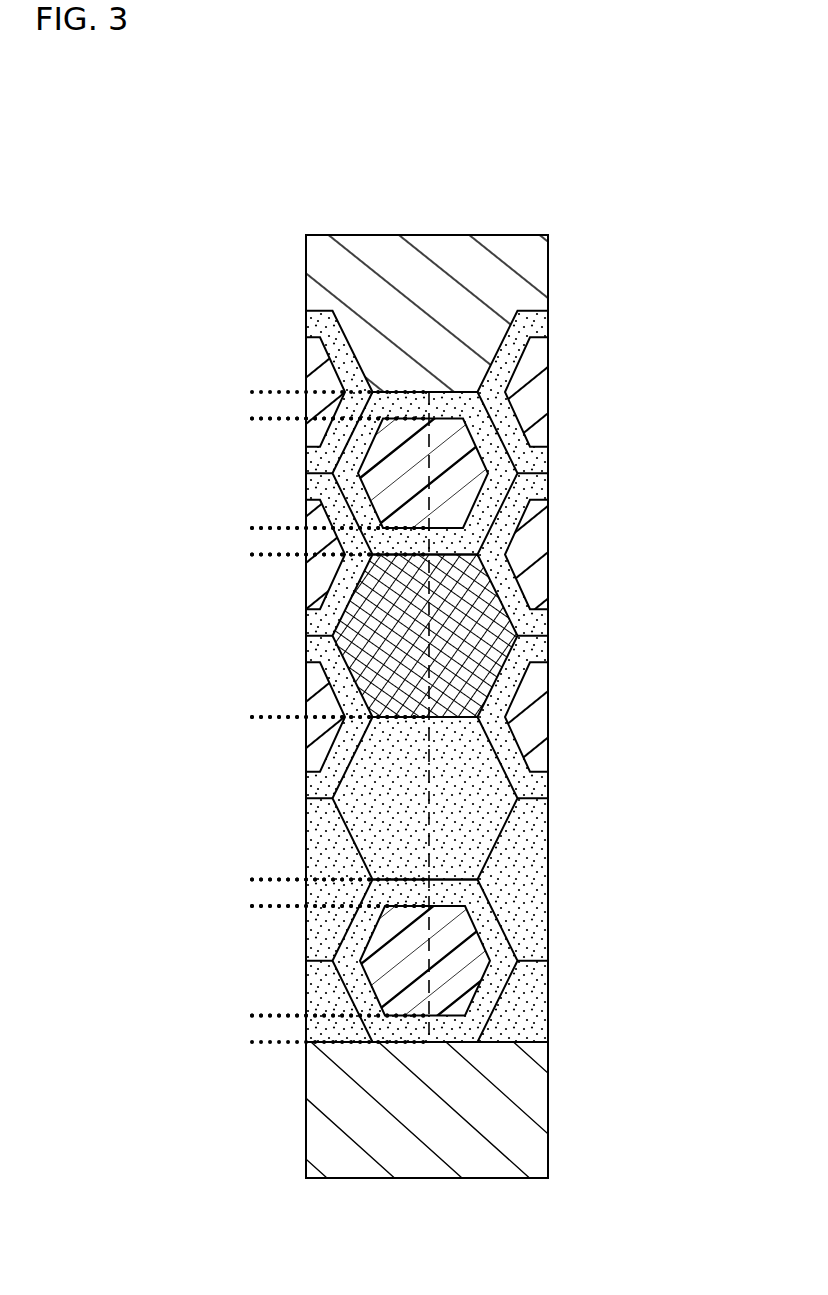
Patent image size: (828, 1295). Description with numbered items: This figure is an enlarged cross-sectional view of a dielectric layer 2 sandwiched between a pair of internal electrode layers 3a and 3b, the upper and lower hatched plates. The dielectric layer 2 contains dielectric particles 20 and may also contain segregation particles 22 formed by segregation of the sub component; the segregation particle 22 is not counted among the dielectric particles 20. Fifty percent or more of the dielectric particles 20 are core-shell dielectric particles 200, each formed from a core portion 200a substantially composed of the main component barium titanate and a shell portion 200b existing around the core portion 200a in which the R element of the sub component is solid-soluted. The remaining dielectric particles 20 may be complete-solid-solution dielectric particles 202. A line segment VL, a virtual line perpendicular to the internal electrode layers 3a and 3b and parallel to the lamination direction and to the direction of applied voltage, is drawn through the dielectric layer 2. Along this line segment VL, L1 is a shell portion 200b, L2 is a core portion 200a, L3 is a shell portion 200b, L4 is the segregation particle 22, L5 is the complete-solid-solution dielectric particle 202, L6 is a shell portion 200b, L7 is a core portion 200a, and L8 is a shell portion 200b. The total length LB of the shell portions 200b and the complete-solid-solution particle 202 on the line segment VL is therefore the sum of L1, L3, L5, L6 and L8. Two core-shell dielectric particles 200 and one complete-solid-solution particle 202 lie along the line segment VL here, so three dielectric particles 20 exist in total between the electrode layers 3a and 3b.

The dielectric layer 2 is at (315, 324).
The internal electrode layer 3a is at (394, 267).
The internal electrode layer 3b is at (343, 1118).
The core-shell dielectric particle 200 is at (460, 508).
The core portion 200a is at (457, 446).
The shell portion 200b is at (472, 403).
The segregation particle 22 is at (470, 577).
The complete-solid-solution dielectric particle 202 is at (465, 742).
The dielectric particle 20 is at (460, 953).
The line segment (virtual line) VL is at (429, 836).
The shell portion length L1 is at (273, 410).
The core portion length L2 is at (269, 418).
The shell portion length L3 is at (269, 528).
The segregation particle length L4 is at (269, 554).
The complete-solid-solution particle length L5 is at (269, 717).
The shell portion length L6 is at (273, 897).
The core portion length L7 is at (269, 906).
The shell portion length L8 is at (273, 1033).